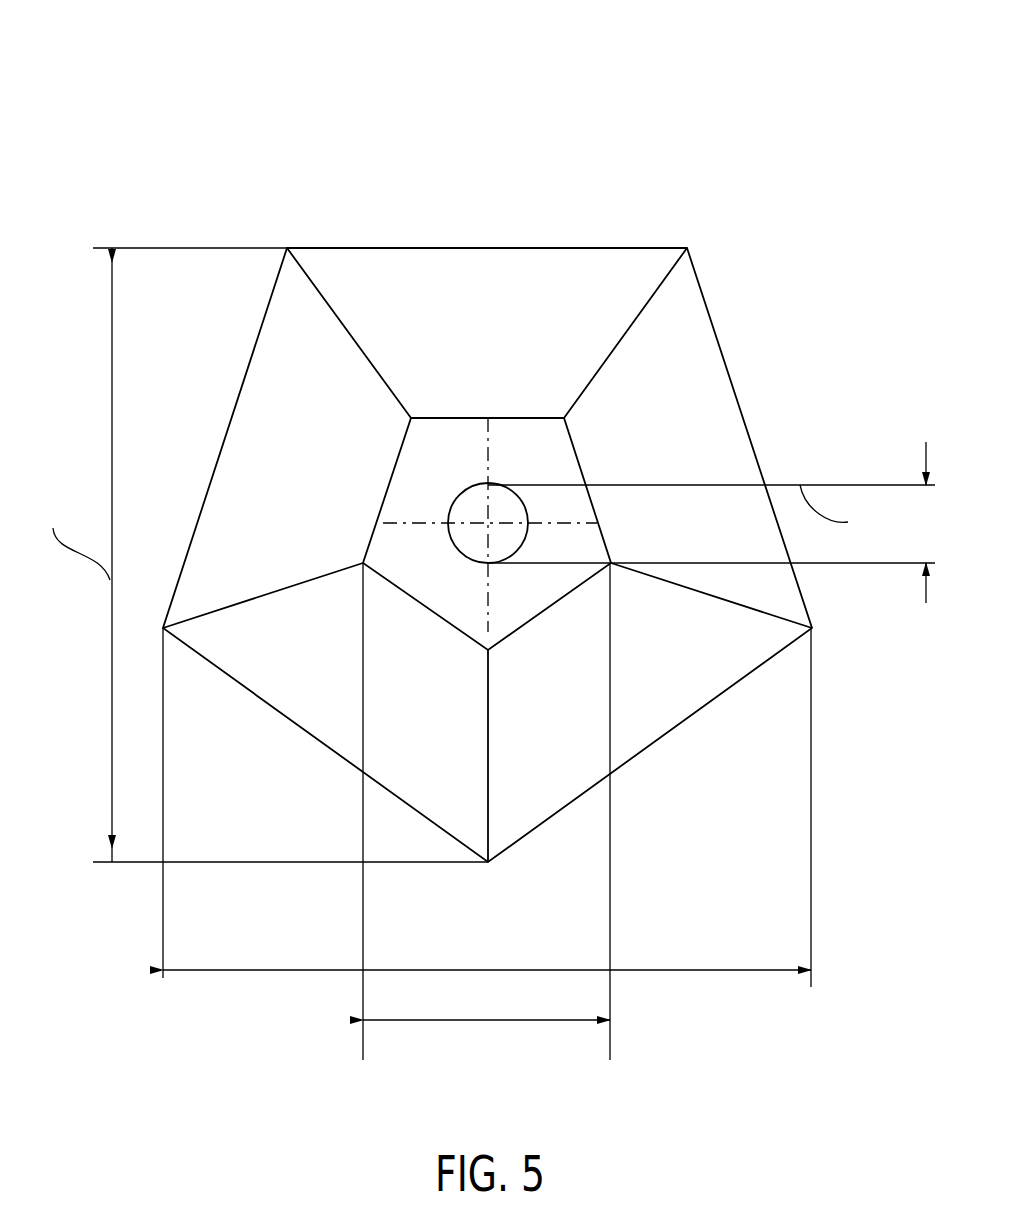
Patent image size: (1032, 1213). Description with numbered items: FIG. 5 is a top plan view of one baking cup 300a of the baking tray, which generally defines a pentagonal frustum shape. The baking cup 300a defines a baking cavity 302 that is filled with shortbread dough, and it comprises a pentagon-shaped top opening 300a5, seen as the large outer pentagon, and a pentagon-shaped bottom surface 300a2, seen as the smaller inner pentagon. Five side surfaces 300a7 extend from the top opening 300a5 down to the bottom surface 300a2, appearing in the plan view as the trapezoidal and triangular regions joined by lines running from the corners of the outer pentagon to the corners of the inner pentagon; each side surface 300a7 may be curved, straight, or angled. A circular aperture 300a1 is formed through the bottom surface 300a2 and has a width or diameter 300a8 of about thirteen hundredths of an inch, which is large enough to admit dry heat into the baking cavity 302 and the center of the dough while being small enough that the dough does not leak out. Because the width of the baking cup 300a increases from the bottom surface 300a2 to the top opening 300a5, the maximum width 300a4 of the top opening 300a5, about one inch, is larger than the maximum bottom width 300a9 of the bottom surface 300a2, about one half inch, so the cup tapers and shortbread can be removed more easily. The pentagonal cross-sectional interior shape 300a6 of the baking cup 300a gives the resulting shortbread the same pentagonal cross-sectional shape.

The baking cup 300a is at (582, 78).
The aperture 300a1 is at (505, 505).
The bottom surface 300a2 is at (448, 437).
The maximum width of the top opening 300a4 is at (235, 971).
The top opening 300a5 is at (546, 291).
The cross-sectional interior shape 300a6 is at (382, 247).
The side surface 300a7 is at (483, 320).
The width or diameter of the aperture 300a8 is at (926, 484).
The maximum bottom width 300a9 is at (412, 1021).
The baking cavity 302 is at (675, 341).